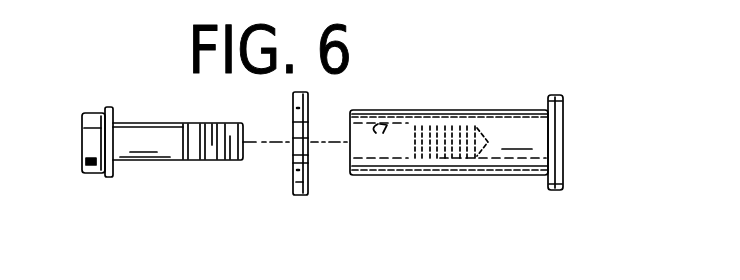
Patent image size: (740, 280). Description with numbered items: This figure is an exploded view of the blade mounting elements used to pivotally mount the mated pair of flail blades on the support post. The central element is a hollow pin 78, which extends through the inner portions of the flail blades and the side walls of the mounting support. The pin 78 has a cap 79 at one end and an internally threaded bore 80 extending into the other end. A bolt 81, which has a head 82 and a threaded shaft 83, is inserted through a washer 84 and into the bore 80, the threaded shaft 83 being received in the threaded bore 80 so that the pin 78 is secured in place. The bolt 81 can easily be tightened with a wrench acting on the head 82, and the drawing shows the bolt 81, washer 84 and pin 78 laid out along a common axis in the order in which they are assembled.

The hollow pin 78 is at (437, 176).
The cap 79 is at (563, 166).
The internally threaded bore 80 is at (374, 118).
The bolt 81 is at (153, 161).
The head 82 is at (92, 172).
The threaded shaft 83 is at (230, 161).
The washer 84 is at (300, 196).